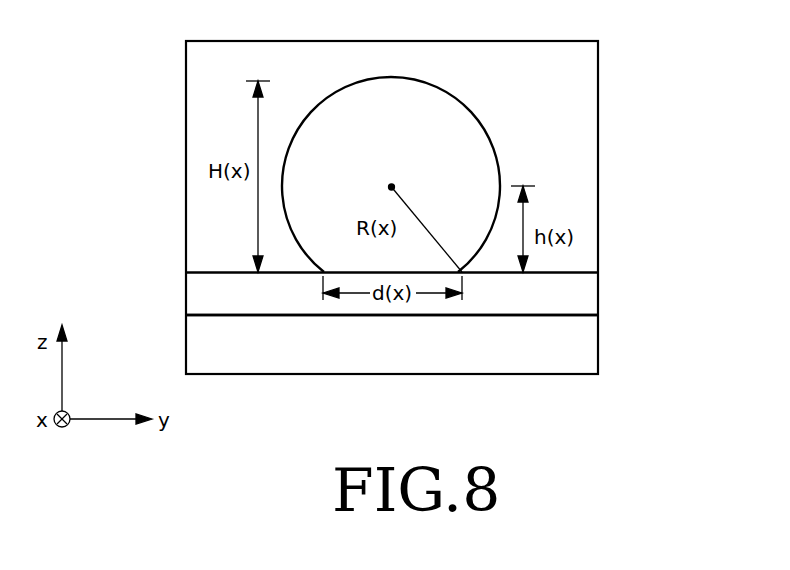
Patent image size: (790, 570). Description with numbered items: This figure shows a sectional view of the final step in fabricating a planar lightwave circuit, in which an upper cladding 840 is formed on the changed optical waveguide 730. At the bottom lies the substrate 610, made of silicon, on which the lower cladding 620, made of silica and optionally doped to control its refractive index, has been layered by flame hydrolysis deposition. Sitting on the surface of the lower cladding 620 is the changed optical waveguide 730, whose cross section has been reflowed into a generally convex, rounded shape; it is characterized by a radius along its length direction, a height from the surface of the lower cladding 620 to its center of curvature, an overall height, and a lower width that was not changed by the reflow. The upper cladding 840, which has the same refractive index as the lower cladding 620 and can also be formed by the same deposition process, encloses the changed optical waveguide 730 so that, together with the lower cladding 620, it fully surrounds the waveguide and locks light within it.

The changed optical waveguide 730 is at (470, 113).
The upper cladding 840 is at (598, 123).
The lower cladding 620 is at (598, 293).
The substrate 610 is at (598, 348).